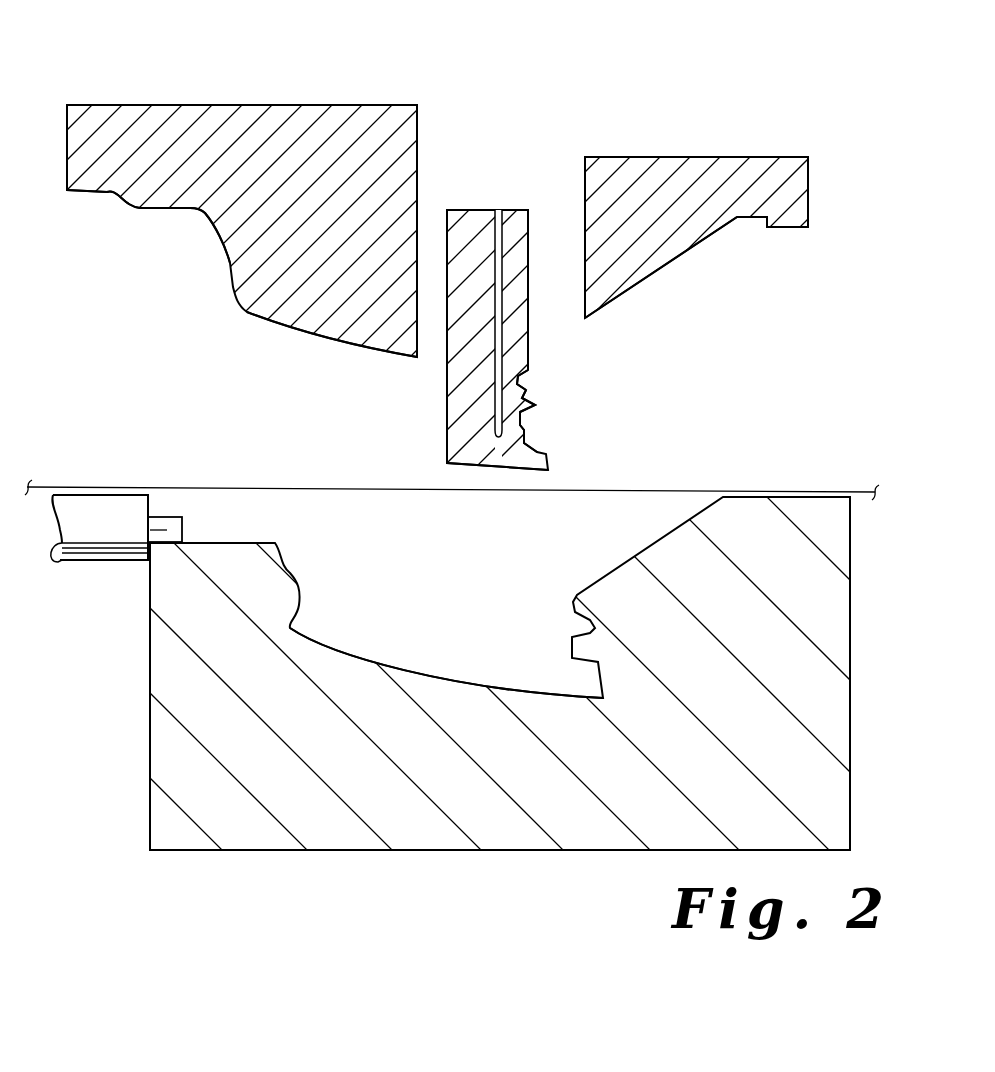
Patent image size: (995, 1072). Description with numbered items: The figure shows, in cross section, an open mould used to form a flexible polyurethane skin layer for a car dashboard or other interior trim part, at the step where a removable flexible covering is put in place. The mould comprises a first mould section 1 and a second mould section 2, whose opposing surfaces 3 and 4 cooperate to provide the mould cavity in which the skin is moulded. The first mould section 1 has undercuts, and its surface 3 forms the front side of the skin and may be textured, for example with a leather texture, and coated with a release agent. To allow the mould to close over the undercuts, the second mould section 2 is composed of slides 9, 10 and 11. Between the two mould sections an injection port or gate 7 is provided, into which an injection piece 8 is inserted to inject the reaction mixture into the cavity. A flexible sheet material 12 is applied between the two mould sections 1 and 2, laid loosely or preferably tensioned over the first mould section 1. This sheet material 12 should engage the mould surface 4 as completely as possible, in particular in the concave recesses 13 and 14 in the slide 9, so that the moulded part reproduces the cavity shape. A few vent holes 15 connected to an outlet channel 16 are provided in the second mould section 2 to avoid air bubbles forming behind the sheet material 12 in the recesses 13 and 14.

The first mould section 1 is at (862, 702).
The second mould section 2 is at (749, 146).
The surface of the first mould section 3 is at (452, 682).
The mould surface of the second mould section 4 is at (298, 333).
The injection port or gate 7 is at (123, 214).
The injection piece 8 is at (97, 548).
The slide 9 is at (478, 307).
The slide 10 is at (288, 112).
The slide 11 is at (667, 163).
The flexible sheet material 12 is at (302, 486).
The recess 13 is at (537, 378).
The recess 14 is at (539, 436).
The vent holes 15 is at (540, 395).
The outlet channel 16 is at (502, 325).